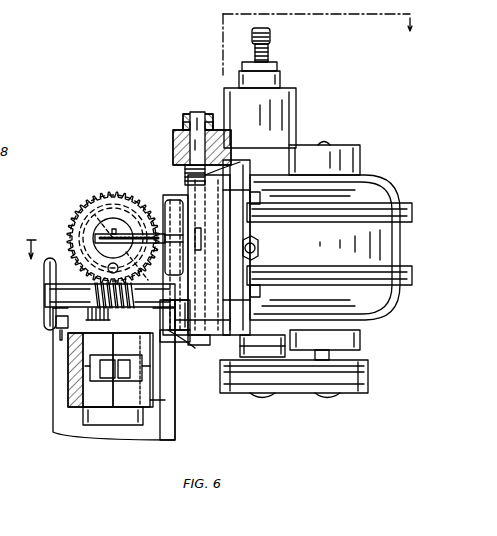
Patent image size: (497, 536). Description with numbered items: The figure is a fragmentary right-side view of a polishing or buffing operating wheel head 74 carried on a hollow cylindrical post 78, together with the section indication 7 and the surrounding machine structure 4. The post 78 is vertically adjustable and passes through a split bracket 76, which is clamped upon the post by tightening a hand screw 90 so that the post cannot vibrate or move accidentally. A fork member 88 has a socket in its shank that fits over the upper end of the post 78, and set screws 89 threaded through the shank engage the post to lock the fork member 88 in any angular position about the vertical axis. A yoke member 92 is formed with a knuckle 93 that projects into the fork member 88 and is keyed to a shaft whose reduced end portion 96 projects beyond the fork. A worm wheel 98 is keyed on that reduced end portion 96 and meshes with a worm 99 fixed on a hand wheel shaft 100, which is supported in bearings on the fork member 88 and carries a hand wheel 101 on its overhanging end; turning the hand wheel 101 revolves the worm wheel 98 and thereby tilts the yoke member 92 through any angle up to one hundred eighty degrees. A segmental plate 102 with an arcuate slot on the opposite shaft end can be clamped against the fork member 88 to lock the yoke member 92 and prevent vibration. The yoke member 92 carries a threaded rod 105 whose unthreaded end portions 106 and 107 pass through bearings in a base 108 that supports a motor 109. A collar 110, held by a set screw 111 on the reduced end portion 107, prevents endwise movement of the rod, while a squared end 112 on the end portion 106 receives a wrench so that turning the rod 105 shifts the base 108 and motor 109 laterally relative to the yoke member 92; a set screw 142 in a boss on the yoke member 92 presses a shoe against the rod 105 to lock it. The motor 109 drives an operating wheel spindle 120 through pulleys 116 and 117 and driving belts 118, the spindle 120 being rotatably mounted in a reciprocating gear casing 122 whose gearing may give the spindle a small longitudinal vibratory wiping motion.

The frame 4 is at (53, 412).
The section line 7 is at (223, 129).
The operating wheel head 74 is at (96, 135).
The bracket 76 is at (68, 388).
The post 78 is at (100, 425).
The fork member 88 is at (68, 330).
The set screws 89 is at (56, 322).
The hand screw 90 is at (160, 403).
The yoke member 92 is at (168, 200).
The knuckle 93 is at (94, 198).
The reduced end portion 96 is at (110, 236).
The worm wheel 98 is at (95, 236).
The worm 99 is at (96, 312).
The hand wheel shaft 100 is at (45, 295).
The hand wheel 101 is at (44, 272).
The segmental plate 102 is at (108, 198).
The threaded rod 105 is at (185, 175).
The end portion 106 is at (190, 330).
The end portion 107 is at (196, 112).
The base 108 is at (173, 148).
The motor 109 is at (376, 320).
The collar 110 is at (183, 122).
The set screw 111 is at (183, 126).
The squared end 112 is at (178, 342).
The pulley 116 is at (352, 395).
The pulley 117 is at (262, 395).
The driving belts 118 is at (300, 383).
The operating wheel spindle 120 is at (270, 50).
The reciprocating gear casing 122 is at (296, 106).
The set screw 142 is at (200, 340).